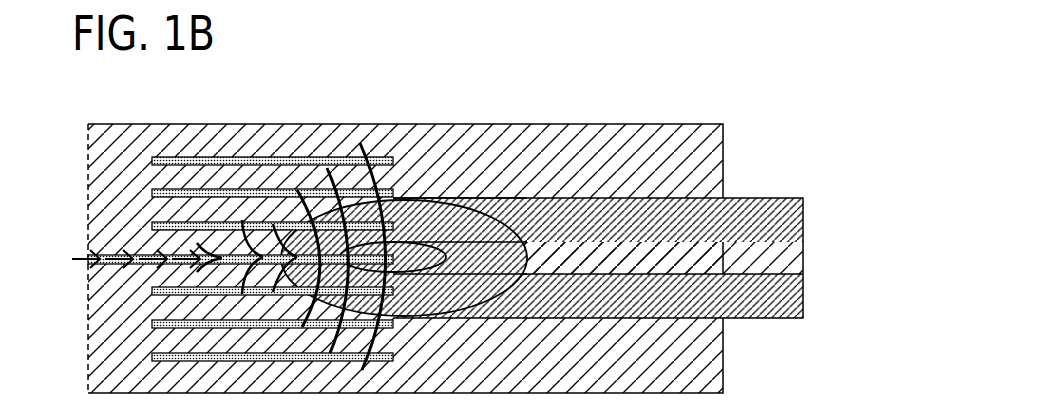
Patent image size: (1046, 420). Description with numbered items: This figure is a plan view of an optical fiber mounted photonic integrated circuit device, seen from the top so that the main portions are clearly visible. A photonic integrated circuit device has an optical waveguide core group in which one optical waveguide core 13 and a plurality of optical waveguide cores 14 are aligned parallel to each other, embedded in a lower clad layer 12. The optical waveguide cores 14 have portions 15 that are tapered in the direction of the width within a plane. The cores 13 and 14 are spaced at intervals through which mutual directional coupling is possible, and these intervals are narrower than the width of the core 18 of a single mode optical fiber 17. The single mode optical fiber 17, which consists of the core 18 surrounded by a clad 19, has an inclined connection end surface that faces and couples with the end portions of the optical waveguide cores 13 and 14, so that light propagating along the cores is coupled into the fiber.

The lower clad layer 12 is at (485, 132).
The optical waveguide core 13 is at (88, 259).
The optical waveguide cores 14 is at (216, 222).
The tapered portions 15 is at (395, 118).
The single mode optical fiber 17 is at (587, 258).
The core 18 is at (803, 257).
The clad 19 is at (803, 224).